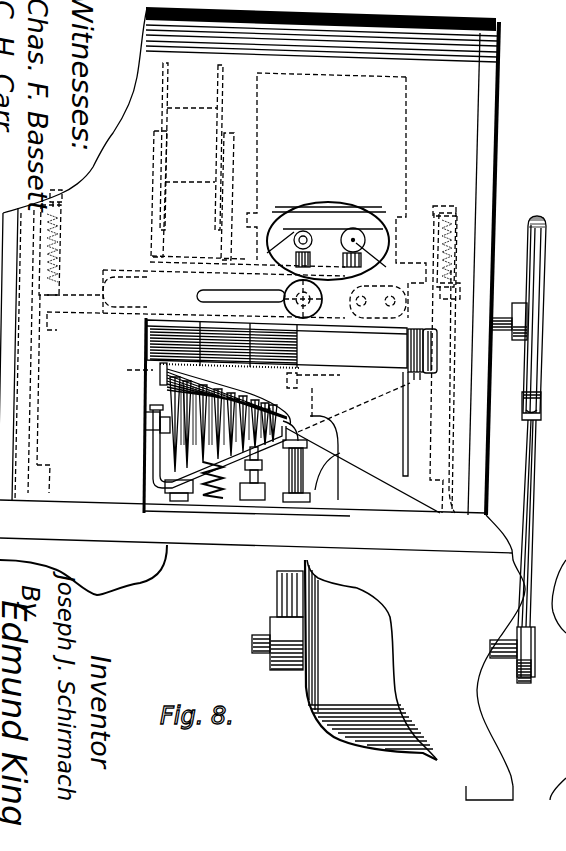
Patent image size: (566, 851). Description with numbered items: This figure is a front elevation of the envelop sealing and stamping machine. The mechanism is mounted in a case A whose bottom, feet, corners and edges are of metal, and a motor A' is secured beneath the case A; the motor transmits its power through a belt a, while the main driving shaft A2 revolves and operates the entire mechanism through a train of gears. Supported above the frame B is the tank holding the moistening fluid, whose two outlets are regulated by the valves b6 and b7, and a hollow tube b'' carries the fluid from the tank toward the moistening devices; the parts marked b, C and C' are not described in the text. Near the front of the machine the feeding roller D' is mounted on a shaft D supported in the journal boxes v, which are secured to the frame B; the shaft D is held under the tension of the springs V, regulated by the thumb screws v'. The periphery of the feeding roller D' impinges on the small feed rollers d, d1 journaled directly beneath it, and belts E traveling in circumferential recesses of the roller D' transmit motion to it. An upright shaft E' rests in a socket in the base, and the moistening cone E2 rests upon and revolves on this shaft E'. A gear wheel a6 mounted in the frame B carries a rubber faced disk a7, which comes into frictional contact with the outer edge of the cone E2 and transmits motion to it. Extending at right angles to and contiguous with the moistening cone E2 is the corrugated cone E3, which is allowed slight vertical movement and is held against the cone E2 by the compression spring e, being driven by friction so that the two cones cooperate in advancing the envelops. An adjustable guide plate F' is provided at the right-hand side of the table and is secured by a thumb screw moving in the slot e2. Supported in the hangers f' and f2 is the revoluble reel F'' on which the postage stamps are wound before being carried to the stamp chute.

The case A is at (283, 403).
The motor A' is at (344, 660).
The main driving shaft A2 is at (500, 308).
The belt a is at (539, 383).
The gear wheel a6 is at (416, 374).
The rubber faced disk a7 is at (436, 367).
The frame B is at (38, 426).
The arm b is at (341, 195).
The valve b6 is at (310, 254).
The valve b7 is at (354, 240).
The hollow tube b'' is at (378, 302).
The drum C is at (323, 241).
The pulley C' is at (313, 299).
The shaft D is at (196, 290).
The feeding roller D' is at (210, 347).
The small feed roller d is at (133, 367).
The small feed roller d1 is at (361, 443).
The belt E is at (252, 415).
The shaft E' is at (237, 471).
The moistening cone E2 is at (253, 400).
The corrugated cone E3 is at (165, 395).
The compression spring e is at (210, 495).
The slot e2 is at (197, 291).
The guide plate F' is at (396, 424).
The revoluble reel F'' is at (191, 146).
The hanger f' is at (209, 196).
The hanger f2 is at (152, 236).
The spring V is at (60, 232).
The thumb screw v' is at (260, 199).
The journal box v is at (257, 309).